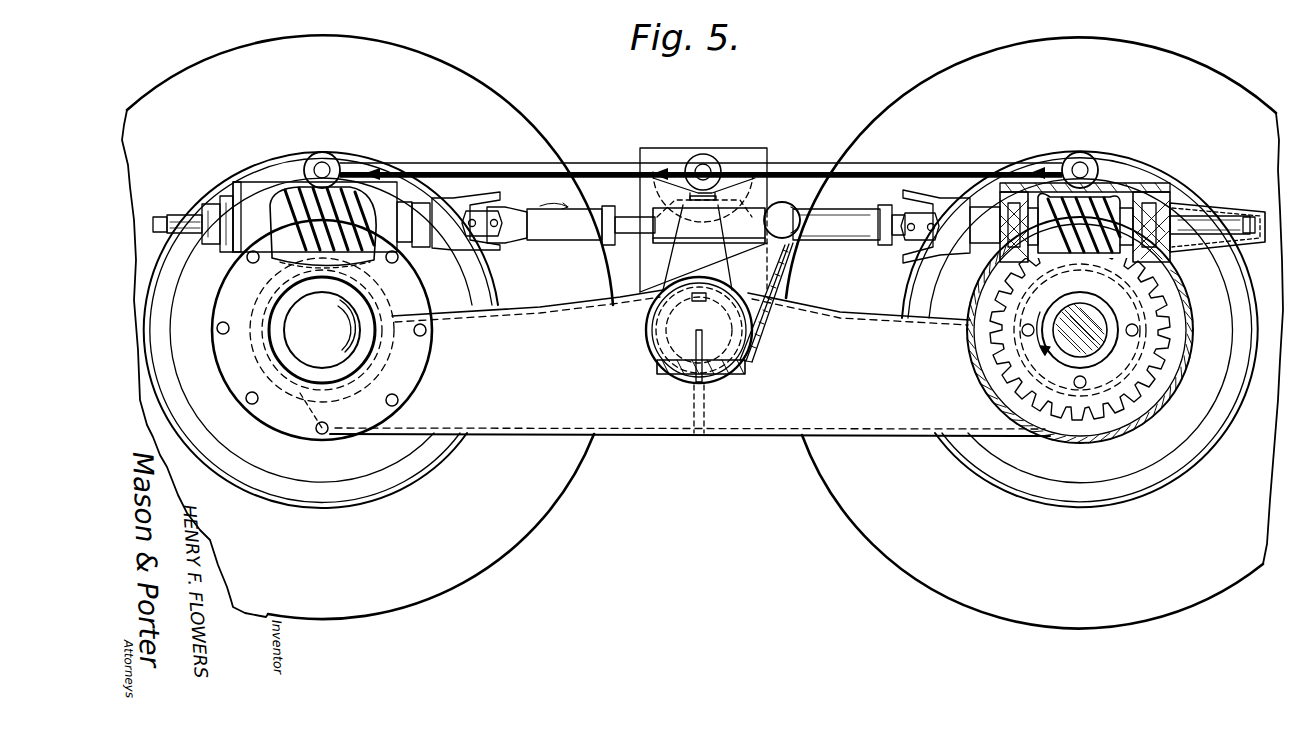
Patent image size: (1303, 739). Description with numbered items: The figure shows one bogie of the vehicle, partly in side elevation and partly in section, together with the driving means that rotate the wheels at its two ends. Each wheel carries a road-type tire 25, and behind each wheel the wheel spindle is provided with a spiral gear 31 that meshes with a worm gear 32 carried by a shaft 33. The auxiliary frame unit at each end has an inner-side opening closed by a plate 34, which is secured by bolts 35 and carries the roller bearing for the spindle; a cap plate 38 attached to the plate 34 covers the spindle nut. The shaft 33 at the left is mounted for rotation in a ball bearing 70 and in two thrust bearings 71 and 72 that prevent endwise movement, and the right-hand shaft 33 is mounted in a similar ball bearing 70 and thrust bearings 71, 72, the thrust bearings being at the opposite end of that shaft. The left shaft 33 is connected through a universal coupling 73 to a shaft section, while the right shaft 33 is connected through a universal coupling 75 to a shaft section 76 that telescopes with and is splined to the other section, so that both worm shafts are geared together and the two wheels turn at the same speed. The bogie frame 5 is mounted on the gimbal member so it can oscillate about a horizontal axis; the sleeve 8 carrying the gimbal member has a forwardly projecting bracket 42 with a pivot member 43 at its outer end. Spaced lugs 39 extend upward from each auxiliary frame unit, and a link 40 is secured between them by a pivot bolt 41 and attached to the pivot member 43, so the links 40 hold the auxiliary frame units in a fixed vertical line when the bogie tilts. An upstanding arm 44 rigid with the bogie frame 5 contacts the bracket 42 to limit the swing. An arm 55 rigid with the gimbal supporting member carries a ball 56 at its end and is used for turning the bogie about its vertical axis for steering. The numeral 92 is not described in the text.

The bogie frame 5 is at (690, 363).
The sleeve 8 is at (757, 156).
The tire 25 is at (520, 535).
The spiral gear 31 is at (415, 282).
The worm gear 32 is at (292, 215).
The shaft 33 is at (1196, 204).
The plate 34 is at (415, 369).
The bolts 35 is at (223, 322).
The cap plate 38 is at (322, 330).
The lugs 39 is at (320, 152).
The link 40 is at (510, 160).
The pivot bolt 41 is at (330, 168).
The bracket 42 is at (698, 168).
The pivot member 43 is at (722, 160).
The upstanding arm 44 is at (684, 274).
The arm 55 is at (790, 281).
The ball 56 is at (792, 203).
The ball bearing 70 is at (1012, 198).
The thrust bearing 71 is at (1150, 225).
The thrust bearing 72 is at (1190, 200).
The universal coupling 73 is at (465, 200).
The universal coupling 75 is at (920, 197).
The shaft section 76 is at (845, 240).
The worm housing 92 is at (1008, 240).